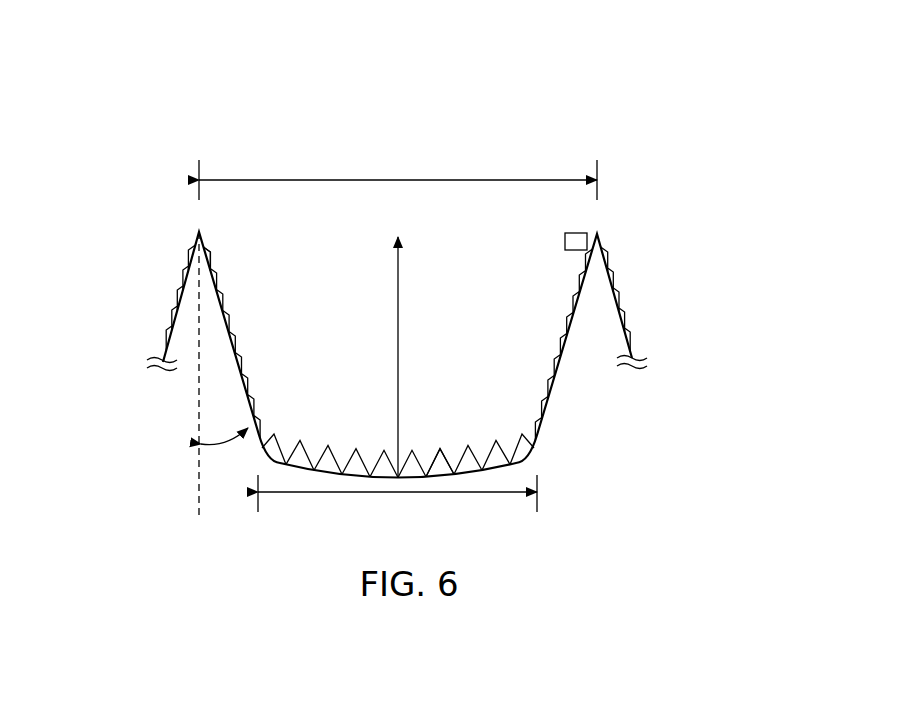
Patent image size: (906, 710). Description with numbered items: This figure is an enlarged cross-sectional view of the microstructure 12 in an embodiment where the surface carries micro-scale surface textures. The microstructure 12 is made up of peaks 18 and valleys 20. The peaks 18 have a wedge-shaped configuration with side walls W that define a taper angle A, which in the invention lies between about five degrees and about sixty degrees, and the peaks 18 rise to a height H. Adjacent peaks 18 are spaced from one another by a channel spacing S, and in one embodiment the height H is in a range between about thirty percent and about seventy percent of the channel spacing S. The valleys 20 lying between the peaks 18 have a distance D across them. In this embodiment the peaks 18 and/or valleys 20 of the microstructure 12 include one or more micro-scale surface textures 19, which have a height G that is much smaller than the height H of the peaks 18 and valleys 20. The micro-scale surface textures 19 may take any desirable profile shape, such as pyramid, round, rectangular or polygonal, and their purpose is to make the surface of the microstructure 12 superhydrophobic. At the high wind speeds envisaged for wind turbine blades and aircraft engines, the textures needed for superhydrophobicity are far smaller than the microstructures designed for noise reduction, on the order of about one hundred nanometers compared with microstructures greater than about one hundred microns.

The microstructure 12 is at (692, 80).
The peaks 18 is at (196, 229).
The micro-scale surface textures 19 is at (208, 248).
The valleys 20 is at (441, 475).
The channel spacing S is at (458, 180).
The height H is at (399, 273).
The distance D is at (397, 499).
The taper angle A is at (230, 442).
The height of micro-scale surface textures G is at (565, 243).
The side walls W is at (168, 308).